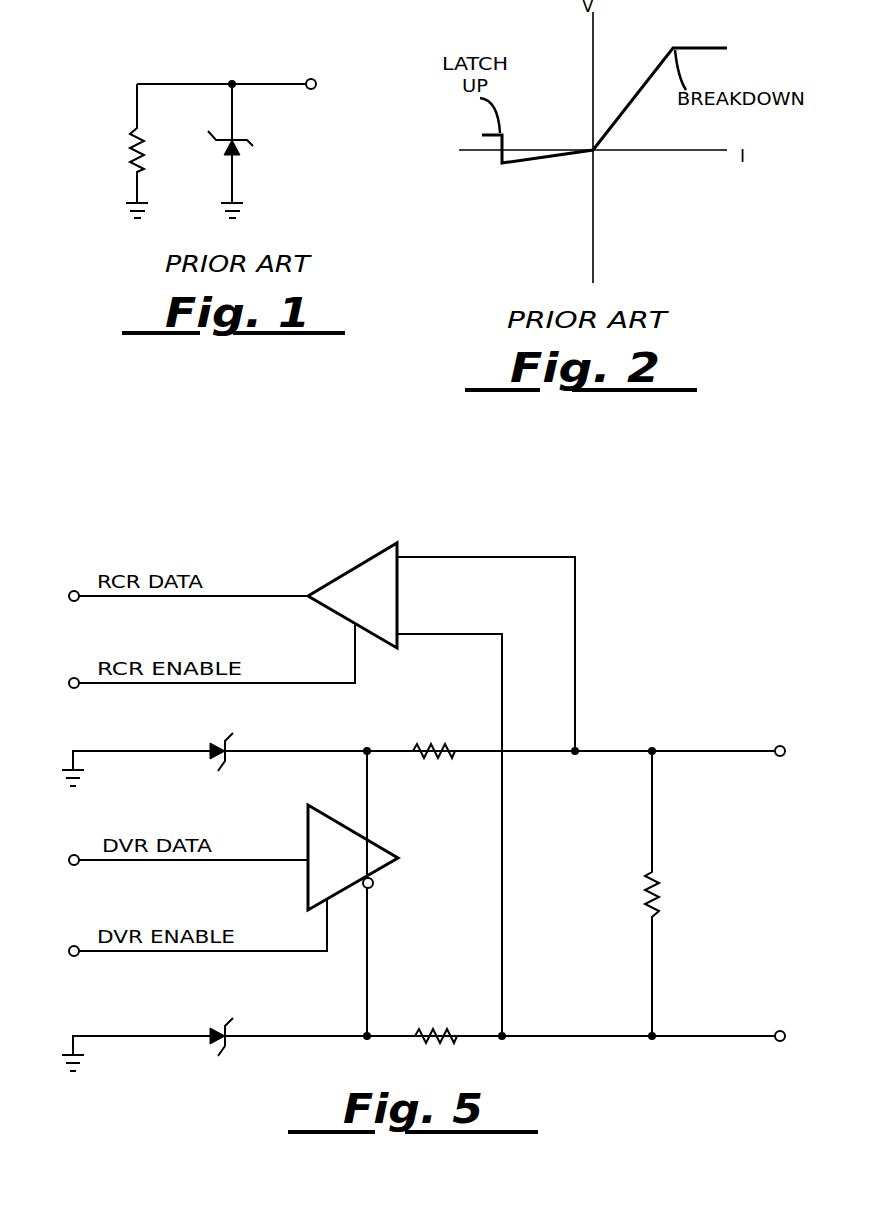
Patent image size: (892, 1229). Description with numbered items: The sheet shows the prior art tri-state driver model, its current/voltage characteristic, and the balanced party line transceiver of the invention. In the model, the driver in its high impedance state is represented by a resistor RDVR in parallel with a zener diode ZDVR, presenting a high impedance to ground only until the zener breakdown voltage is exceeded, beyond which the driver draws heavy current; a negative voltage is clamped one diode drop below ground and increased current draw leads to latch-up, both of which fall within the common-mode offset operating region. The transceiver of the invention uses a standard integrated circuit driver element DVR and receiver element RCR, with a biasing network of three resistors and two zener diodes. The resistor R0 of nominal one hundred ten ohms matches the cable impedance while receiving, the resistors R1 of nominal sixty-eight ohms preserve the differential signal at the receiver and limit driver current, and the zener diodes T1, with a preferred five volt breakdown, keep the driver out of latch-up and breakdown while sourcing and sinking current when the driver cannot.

In FIG. 1, the resistor RDVR is at (110, 151).
In FIG. 1, the zener diode ZDVR is at (255, 151).
In FIG. 5, the integrated circuit receiver element RCR is at (352, 595).
In FIG. 5, the integrated circuit driver element DVR is at (353, 857).
In FIG. 5, the zener diodes T1 is at (217, 885).
In FIG. 5, the resistors R1 is at (435, 881).
In FIG. 5, the resistor R0 is at (666, 893).